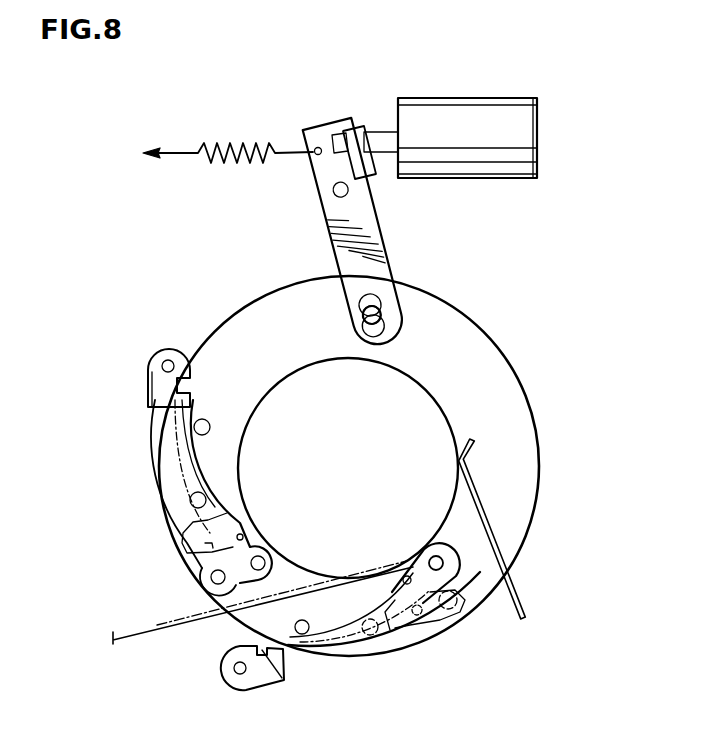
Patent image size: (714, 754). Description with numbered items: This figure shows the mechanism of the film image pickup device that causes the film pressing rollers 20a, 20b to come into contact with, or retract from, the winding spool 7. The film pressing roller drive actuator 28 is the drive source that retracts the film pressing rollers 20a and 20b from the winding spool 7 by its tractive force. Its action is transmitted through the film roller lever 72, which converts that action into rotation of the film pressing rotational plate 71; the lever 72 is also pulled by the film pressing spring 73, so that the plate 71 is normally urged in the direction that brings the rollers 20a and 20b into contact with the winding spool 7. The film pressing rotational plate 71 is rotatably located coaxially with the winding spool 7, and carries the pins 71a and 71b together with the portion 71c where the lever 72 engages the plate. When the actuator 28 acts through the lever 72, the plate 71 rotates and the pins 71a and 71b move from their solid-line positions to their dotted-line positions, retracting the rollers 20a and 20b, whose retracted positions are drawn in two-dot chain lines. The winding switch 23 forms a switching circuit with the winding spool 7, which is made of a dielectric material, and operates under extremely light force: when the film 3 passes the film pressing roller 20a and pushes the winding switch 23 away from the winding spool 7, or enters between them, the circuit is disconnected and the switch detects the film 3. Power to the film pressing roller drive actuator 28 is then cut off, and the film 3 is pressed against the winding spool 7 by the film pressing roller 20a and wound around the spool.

The film 3 is at (140, 642).
The winding spool 7 is at (413, 387).
The film pressing roller 20a is at (403, 593).
The film pressing roller 20b is at (183, 549).
The winding switch 23 is at (500, 578).
The film pressing roller drive actuator 28 is at (488, 124).
The film pressing rotational plate 71 is at (508, 408).
The pin 71a is at (233, 641).
The pin 71b is at (196, 370).
The pin 71c is at (381, 316).
The film roller lever 72 is at (362, 213).
The film pressing spring 73 is at (248, 152).